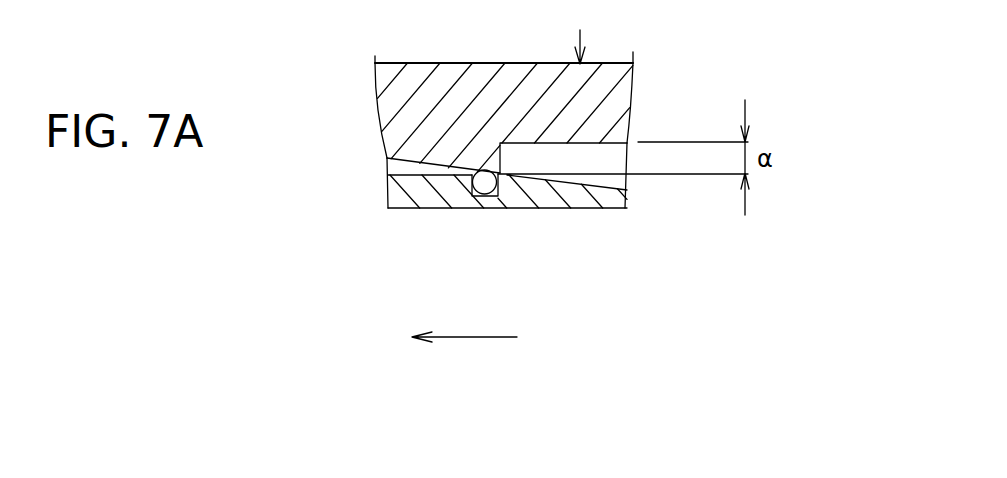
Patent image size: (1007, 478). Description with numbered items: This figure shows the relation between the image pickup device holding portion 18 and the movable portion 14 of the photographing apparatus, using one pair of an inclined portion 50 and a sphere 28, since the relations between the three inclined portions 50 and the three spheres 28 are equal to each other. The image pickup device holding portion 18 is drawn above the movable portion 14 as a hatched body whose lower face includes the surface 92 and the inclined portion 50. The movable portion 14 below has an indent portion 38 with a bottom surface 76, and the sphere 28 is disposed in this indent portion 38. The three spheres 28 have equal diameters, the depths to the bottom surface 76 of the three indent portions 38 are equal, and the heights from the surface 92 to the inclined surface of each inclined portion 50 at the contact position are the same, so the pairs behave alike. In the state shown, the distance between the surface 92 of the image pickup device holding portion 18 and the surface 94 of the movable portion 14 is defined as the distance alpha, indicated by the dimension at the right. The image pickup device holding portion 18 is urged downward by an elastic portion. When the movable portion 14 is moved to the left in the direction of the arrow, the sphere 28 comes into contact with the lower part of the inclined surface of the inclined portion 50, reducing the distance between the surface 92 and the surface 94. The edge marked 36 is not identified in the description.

The image pickup device holding portion 18 is at (473, 63).
The surface 92 is at (596, 137).
The inclined portion 50 is at (387, 160).
The surface 94 is at (387, 206).
The movable portion 14 is at (425, 210).
The bottom surface 76 is at (481, 194).
The sphere 28 is at (485, 188).
The indent portion 38 is at (527, 210).
The side surface 36 is at (627, 210).